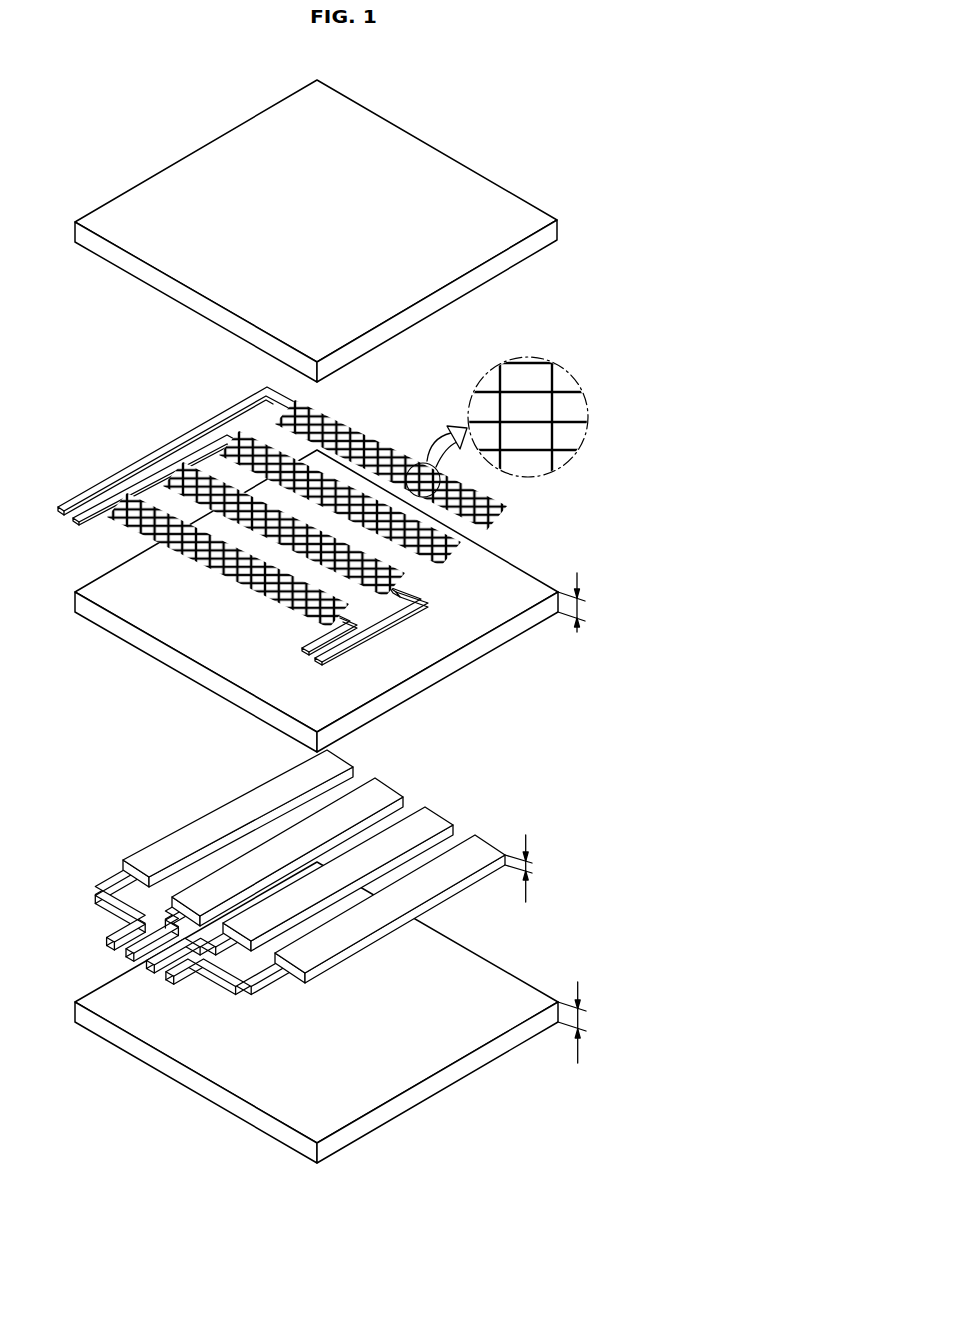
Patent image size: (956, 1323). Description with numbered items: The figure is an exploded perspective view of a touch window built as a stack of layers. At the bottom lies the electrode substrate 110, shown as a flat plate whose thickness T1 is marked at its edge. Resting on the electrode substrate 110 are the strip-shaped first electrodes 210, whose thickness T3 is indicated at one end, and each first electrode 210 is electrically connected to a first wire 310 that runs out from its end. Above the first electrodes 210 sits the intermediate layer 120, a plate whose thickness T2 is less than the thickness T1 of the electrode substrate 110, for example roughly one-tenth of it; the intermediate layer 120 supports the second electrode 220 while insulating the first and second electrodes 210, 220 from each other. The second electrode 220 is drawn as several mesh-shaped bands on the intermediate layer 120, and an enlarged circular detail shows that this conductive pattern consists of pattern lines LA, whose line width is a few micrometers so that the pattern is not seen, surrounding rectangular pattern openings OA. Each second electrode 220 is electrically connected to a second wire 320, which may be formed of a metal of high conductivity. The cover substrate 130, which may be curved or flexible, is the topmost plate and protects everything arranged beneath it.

The electrode substrate 110 is at (457, 1068).
The intermediate layer 120 is at (497, 608).
The cover substrate 130 is at (432, 168).
The first electrode 210 is at (432, 822).
The second electrode 220 is at (535, 453).
The first wire 310 is at (276, 983).
The second wire 320 is at (383, 620).
The pattern line LA is at (530, 417).
The pattern opening OA is at (580, 435).
The thickness of the electrode substrate T1 is at (585, 1022).
The thickness of the intermediate layer T2 is at (584, 602).
The thickness of the first electrode T3 is at (532, 868).